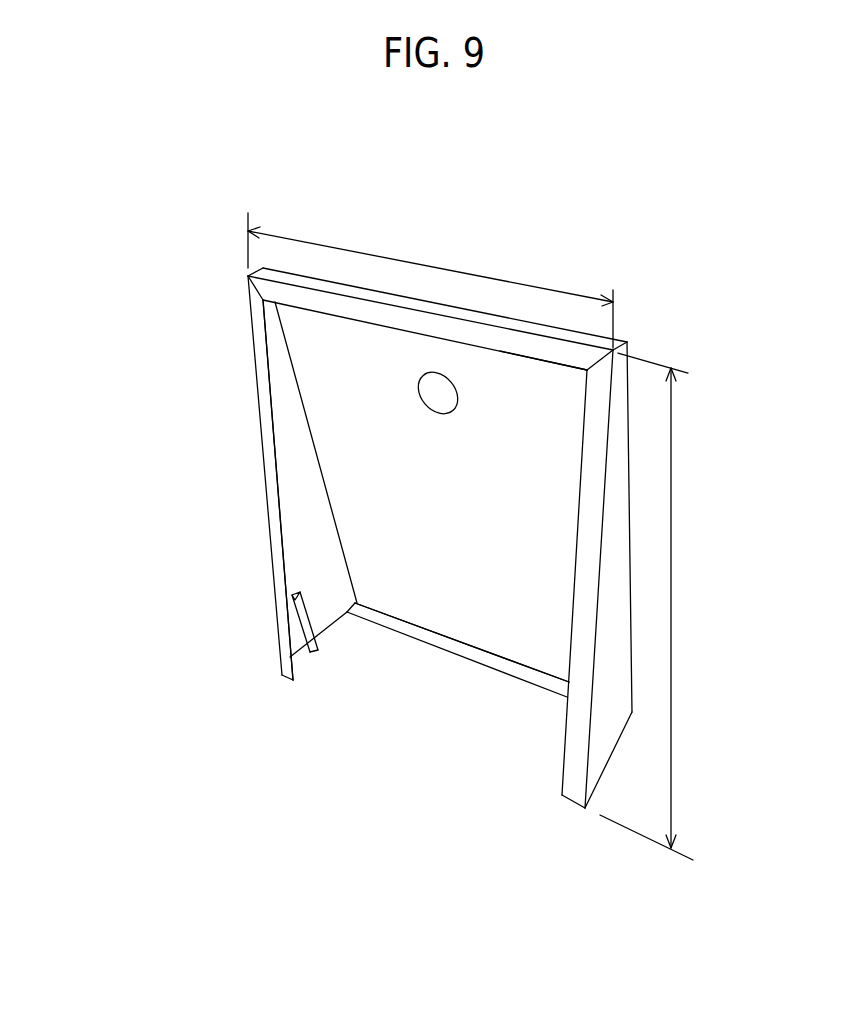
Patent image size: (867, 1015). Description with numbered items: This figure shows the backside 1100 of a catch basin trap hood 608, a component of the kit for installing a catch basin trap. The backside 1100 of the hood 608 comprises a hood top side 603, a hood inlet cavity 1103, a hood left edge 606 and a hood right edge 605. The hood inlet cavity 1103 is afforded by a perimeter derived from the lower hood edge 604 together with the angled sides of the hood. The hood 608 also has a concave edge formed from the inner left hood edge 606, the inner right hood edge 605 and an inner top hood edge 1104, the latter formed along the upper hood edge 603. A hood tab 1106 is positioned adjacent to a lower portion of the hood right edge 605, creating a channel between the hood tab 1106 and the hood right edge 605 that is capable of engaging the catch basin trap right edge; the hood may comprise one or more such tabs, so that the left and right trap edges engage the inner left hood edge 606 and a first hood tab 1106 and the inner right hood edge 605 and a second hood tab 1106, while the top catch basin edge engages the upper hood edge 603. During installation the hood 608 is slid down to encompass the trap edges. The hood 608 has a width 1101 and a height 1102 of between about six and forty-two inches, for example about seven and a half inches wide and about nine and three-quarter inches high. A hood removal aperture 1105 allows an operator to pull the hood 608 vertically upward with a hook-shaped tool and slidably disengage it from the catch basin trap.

The backside of hood 1100 is at (150, 294).
The width 1101 is at (337, 248).
The height 1102 is at (672, 533).
The hood inlet cavity 1103 is at (435, 682).
The hood top side 603 is at (542, 343).
The lower hood edge 604 is at (485, 657).
The hood right edge 605 is at (268, 515).
The hood left edge 606 is at (592, 549).
The catch basin trap hood 608 is at (265, 365).
The inner top hood edge 1104 is at (563, 367).
The hood removal aperture 1105 is at (447, 417).
The hood tab 1106 is at (305, 625).